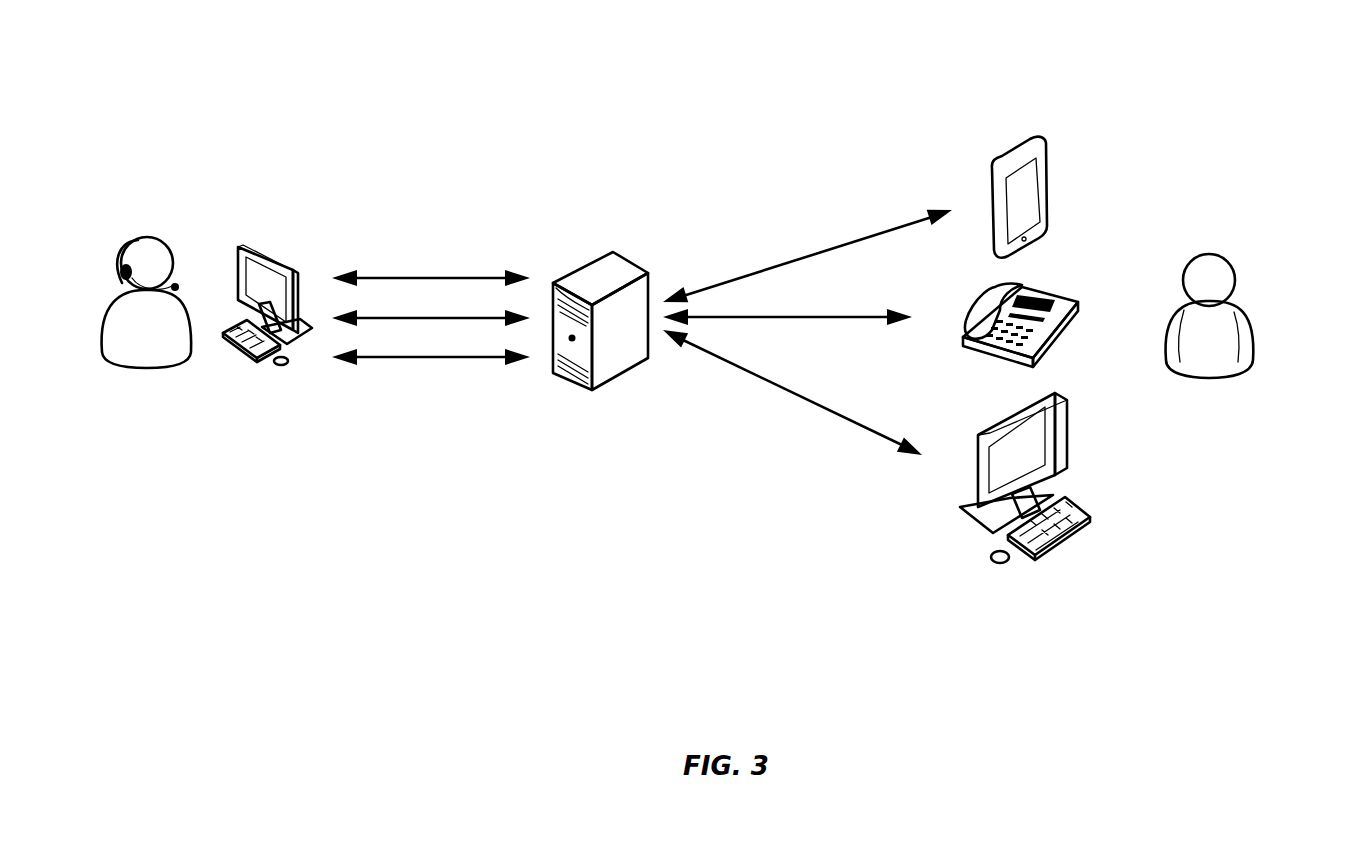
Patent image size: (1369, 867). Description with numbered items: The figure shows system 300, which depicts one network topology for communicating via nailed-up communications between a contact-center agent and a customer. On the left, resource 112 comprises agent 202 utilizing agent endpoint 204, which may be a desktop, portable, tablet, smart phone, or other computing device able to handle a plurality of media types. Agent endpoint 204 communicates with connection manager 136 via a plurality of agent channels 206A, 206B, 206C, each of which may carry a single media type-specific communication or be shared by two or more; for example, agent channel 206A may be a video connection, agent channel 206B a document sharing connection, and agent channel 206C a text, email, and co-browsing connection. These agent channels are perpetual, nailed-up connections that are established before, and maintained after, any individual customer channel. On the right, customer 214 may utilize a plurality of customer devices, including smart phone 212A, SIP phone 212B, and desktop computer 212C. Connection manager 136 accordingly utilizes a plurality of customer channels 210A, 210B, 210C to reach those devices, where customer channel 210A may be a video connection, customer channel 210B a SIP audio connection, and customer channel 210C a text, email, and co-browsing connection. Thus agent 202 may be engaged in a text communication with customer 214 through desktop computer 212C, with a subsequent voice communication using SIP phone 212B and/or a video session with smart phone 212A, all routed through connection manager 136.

The system 300 is at (1285, 48).
The resource 112 is at (300, 149).
The agent 202 is at (165, 243).
The agent endpoint 204 is at (277, 255).
The agent channel 206A is at (433, 277).
The agent channel 206B is at (442, 317).
The agent channel 206C is at (437, 358).
The connection manager 136 is at (633, 258).
The customer channel 210A is at (830, 247).
The customer channel 210B is at (822, 313).
The customer channel 210C is at (810, 397).
The smart phone 212A is at (1047, 175).
The SIP phone 212B is at (1075, 308).
The desktop computer 212C is at (1068, 445).
The customer 214 is at (1235, 277).